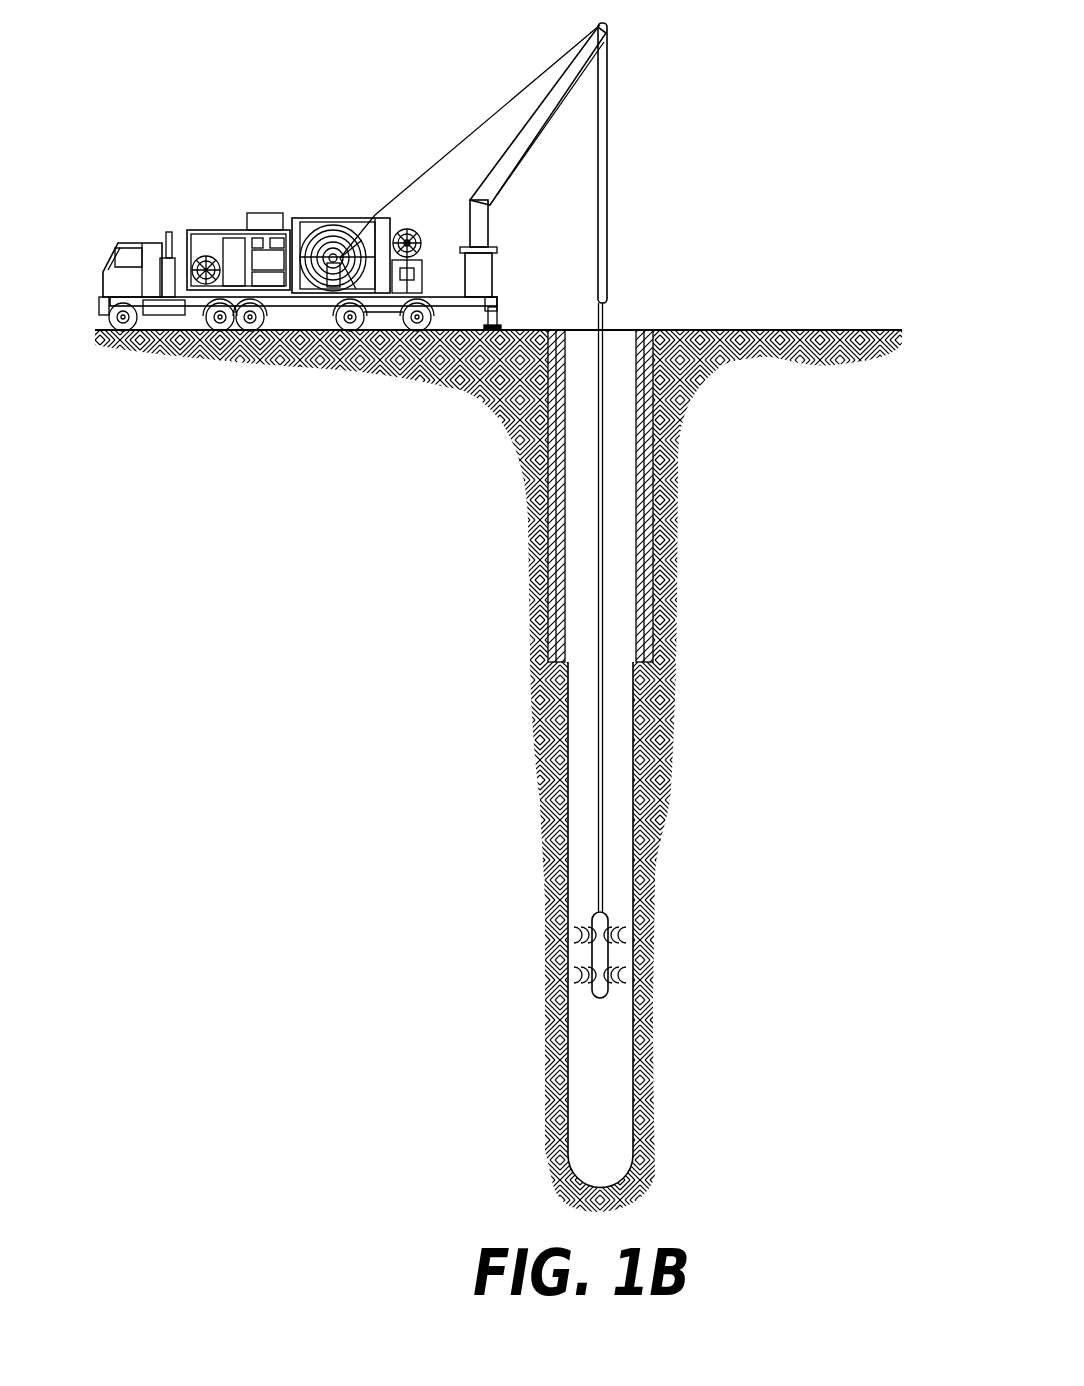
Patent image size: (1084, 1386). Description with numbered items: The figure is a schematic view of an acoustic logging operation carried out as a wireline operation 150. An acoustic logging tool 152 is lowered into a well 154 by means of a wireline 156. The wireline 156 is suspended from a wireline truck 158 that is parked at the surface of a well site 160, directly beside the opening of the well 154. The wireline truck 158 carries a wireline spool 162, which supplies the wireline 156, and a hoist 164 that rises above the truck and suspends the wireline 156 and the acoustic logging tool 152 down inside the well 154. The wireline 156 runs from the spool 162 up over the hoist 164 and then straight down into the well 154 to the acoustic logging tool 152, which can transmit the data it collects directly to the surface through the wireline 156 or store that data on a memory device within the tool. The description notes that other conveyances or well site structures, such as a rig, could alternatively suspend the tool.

The wireline operation 150 is at (778, 53).
The acoustic logging tool 152 is at (610, 990).
The well 154 is at (616, 453).
The wireline 156 is at (603, 812).
The wireline truck 158 is at (226, 232).
The well site 160 is at (663, 330).
The wireline spool 162 is at (335, 232).
The hoist 164 is at (607, 78).